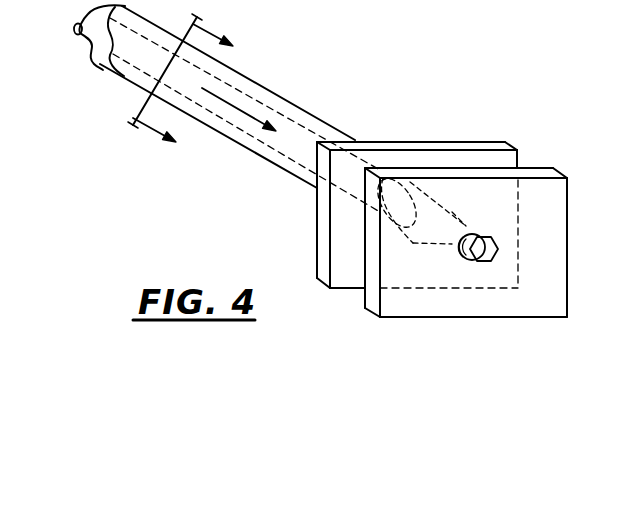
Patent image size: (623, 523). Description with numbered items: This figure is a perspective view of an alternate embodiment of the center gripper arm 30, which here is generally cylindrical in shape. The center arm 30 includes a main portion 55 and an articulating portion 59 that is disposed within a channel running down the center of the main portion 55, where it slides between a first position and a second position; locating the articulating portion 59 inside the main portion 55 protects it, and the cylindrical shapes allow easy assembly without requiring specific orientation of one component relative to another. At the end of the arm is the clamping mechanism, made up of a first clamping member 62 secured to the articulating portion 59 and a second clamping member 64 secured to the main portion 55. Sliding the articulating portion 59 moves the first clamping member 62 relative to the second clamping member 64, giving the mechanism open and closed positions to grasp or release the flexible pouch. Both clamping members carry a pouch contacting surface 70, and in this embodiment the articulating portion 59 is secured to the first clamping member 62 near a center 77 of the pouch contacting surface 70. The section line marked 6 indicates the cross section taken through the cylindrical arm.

The center arm 30 is at (283, 75).
The articulating portion 59 is at (97, 33).
The main portion 55 is at (132, 72).
The section line 6- 6 is at (182, 89).
The second clamping member 64 is at (487, 162).
The first clamping member 62 is at (553, 200).
The center of the pouch contacting surface 77 is at (460, 240).
The pouch contacting surface 70 is at (348, 255).